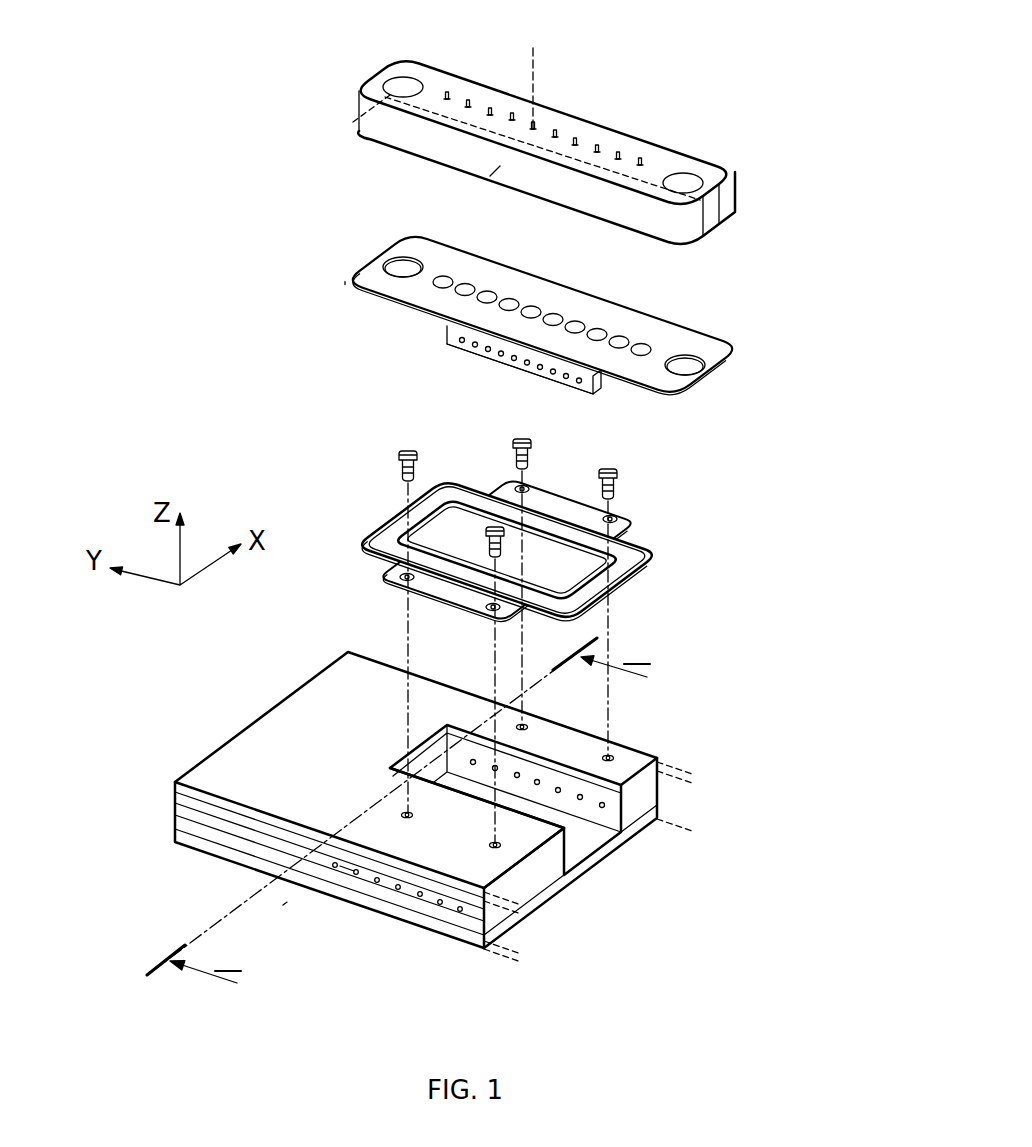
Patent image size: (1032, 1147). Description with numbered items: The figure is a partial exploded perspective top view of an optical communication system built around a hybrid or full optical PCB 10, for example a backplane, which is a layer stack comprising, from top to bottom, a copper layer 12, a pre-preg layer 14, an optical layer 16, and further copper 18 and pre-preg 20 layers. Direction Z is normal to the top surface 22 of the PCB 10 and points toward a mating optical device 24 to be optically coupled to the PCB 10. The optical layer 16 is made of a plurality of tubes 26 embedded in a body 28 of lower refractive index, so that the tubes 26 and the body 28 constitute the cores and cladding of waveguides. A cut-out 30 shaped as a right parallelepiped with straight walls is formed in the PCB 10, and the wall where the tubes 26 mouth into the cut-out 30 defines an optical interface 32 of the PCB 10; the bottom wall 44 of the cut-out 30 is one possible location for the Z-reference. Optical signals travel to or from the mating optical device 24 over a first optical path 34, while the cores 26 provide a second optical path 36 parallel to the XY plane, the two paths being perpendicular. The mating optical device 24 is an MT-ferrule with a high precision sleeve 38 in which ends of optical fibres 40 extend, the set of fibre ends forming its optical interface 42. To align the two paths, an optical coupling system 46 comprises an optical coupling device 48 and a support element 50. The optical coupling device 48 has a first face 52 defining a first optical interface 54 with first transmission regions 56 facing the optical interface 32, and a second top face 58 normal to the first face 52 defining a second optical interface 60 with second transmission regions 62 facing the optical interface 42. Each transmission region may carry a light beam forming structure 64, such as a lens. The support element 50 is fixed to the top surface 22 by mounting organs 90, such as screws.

The optical PCB 10 is at (529, 985).
The copper layer 12 is at (205, 795).
The pre-preg layer 14 is at (185, 800).
The optical layer 16 is at (192, 817).
The copper layer 18 is at (220, 840).
The pre-preg layer 20 is at (398, 913).
The top surface 22 is at (507, 853).
The mating optical device 24 is at (690, 135).
The tubes 26 is at (462, 912).
The body 28 is at (347, 870).
The cut-out 30 is at (577, 843).
The optical interface 32 is at (568, 855).
The first optical path 34 is at (537, 68).
The second optical path 36 is at (267, 917).
The sleeve 38 is at (716, 210).
The optical fibres 40 is at (598, 148).
The optical interface 42 is at (495, 172).
The bottom wall 44 is at (603, 832).
The optical coupling system 46 is at (253, 247).
The optical coupling device 48 is at (757, 375).
The support element 50 is at (685, 547).
The first face 52 is at (447, 333).
The first optical interface 54 is at (513, 376).
The first transmission regions 56 is at (485, 352).
The second top face 58 is at (370, 277).
The second optical interface 60 is at (560, 302).
The second transmission regions 62 is at (492, 297).
The light beam forming structure 64 is at (617, 343).
The mounting organs 90 is at (488, 537).